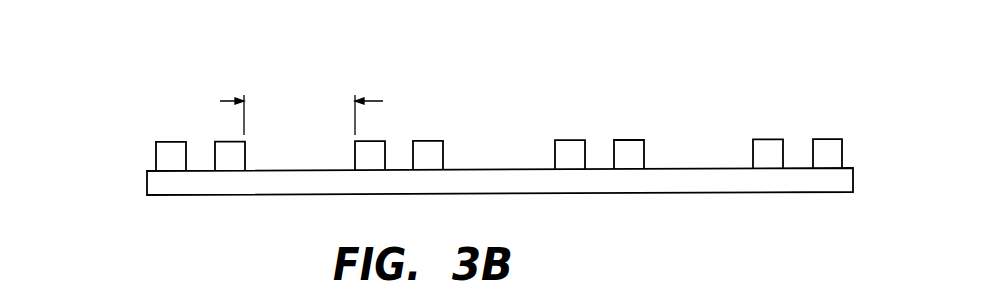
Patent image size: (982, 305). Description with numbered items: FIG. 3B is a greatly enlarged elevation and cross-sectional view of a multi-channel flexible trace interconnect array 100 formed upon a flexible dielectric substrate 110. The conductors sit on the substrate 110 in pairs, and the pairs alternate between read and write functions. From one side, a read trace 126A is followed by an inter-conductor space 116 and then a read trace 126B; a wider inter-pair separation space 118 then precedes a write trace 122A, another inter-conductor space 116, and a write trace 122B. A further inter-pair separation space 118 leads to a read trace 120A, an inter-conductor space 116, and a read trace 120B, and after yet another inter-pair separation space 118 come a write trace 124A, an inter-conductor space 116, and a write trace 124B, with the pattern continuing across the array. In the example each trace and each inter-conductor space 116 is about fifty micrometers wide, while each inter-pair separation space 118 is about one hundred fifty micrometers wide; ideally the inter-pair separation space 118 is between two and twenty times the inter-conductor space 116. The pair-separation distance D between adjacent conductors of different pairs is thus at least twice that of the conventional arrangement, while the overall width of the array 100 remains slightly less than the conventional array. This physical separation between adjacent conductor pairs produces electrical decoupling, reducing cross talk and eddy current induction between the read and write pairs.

The trace interconnect array 100 is at (172, 208).
The flexible dielectric substrate 110 is at (280, 188).
The inter-conductor space 116 is at (203, 155).
The inter-pair separation space 118 is at (317, 163).
The read trace 120A is at (577, 142).
The read trace 120B is at (635, 142).
The write trace 122A is at (383, 142).
The write trace 122B is at (438, 142).
The write trace 124A is at (778, 141).
The write trace 124B is at (837, 141).
The read trace 126A is at (167, 142).
The read trace 126B is at (225, 142).